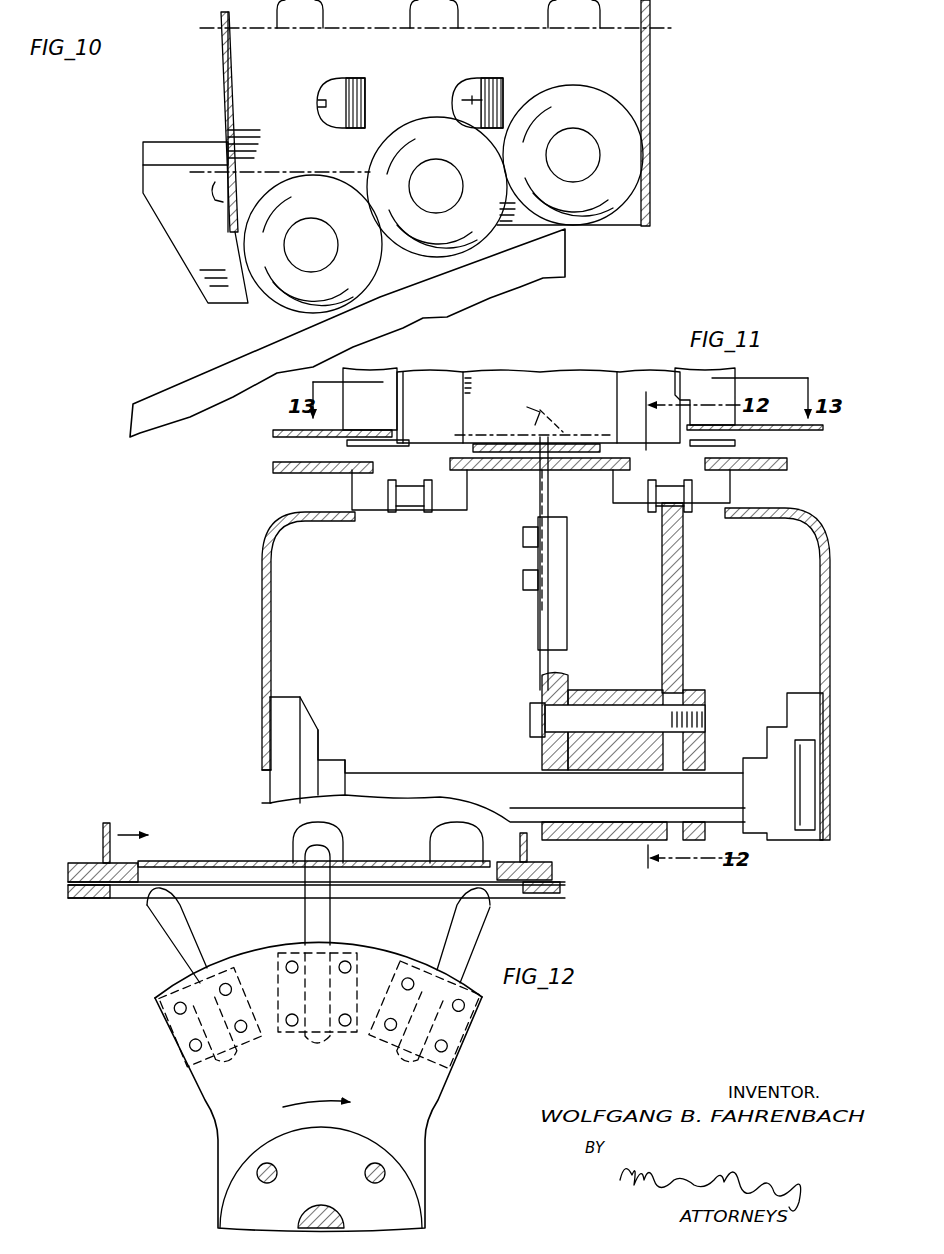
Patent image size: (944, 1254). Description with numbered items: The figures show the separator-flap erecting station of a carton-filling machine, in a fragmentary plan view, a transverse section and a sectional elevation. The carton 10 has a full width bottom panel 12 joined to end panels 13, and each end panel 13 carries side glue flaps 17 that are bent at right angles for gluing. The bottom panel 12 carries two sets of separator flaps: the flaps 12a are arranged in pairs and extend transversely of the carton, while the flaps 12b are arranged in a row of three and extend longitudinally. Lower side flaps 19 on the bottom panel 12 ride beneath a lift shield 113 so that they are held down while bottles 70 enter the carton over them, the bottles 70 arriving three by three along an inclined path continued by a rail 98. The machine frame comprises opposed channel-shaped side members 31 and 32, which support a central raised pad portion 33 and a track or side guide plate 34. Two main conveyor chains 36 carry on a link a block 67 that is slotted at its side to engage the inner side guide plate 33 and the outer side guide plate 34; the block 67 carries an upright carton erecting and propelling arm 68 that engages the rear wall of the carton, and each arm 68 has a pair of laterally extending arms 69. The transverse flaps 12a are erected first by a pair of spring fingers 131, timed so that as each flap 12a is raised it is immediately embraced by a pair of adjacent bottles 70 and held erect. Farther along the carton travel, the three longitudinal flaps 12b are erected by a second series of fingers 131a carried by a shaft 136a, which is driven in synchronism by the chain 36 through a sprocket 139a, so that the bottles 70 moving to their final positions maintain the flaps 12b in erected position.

In FIG. 10, the carton 10 is at (650, 56).
In FIG. 11, the carton 10 is at (515, 378).
In FIG. 12, the carton 10 is at (518, 858).
In FIG. 10, the bottom panel 12 is at (569, 141).
In FIG. 12, the bottom panel 12 is at (228, 860).
In FIG. 10, the separator flaps 12a is at (492, 90).
In FIG. 10, the separator flaps 12b is at (565, 20).
In FIG. 11, the separator flaps 12b is at (550, 402).
In FIG. 12, the separator flaps 12b is at (445, 835).
In FIG. 10, the end panel 13 is at (650, 88).
In FIG. 11, the end panel 13 is at (485, 388).
In FIG. 12, the end panel 13 is at (528, 845).
In FIG. 11, the side glue flaps 17 is at (725, 370).
In FIG. 11, the side flaps 19 is at (735, 444).
In FIG. 11, the side member 31 is at (812, 536).
In FIG. 11, the side member 32 is at (262, 553).
In FIG. 11, the side guide plate 33 is at (570, 470).
In FIG. 12, the side guide plate 33 is at (548, 898).
In FIG. 11, the side guide plate 34 is at (770, 470).
In FIG. 11, the main conveyor chains 36 is at (686, 505).
In FIG. 11, the block 67 is at (710, 492).
In FIG. 10, the carton erecting and propelling arm 68 is at (190, 152).
In FIG. 10, the laterally extending arms 69 is at (180, 222).
In FIG. 10, the bottles 70 is at (630, 152).
In FIG. 10, the rail 98 is at (505, 280).
In FIG. 11, the lift shield 113 is at (828, 460).
In FIG. 10, the spring fingers 131 is at (472, 96).
In FIG. 11, the fingers 131a is at (538, 490).
In FIG. 12, the fingers 131a is at (472, 925).
In FIG. 11, the shaft 136a is at (390, 780).
In FIG. 12, the shaft 136a is at (300, 1215).
In FIG. 11, the sprocket 139a is at (683, 656).